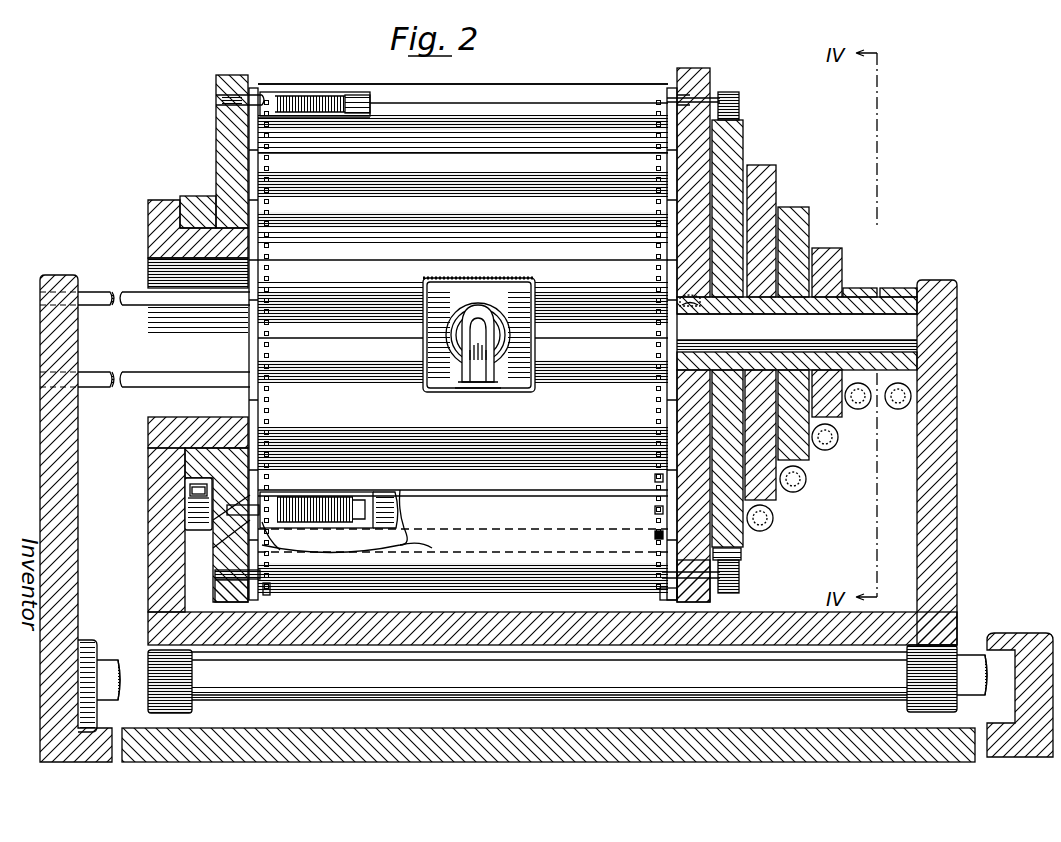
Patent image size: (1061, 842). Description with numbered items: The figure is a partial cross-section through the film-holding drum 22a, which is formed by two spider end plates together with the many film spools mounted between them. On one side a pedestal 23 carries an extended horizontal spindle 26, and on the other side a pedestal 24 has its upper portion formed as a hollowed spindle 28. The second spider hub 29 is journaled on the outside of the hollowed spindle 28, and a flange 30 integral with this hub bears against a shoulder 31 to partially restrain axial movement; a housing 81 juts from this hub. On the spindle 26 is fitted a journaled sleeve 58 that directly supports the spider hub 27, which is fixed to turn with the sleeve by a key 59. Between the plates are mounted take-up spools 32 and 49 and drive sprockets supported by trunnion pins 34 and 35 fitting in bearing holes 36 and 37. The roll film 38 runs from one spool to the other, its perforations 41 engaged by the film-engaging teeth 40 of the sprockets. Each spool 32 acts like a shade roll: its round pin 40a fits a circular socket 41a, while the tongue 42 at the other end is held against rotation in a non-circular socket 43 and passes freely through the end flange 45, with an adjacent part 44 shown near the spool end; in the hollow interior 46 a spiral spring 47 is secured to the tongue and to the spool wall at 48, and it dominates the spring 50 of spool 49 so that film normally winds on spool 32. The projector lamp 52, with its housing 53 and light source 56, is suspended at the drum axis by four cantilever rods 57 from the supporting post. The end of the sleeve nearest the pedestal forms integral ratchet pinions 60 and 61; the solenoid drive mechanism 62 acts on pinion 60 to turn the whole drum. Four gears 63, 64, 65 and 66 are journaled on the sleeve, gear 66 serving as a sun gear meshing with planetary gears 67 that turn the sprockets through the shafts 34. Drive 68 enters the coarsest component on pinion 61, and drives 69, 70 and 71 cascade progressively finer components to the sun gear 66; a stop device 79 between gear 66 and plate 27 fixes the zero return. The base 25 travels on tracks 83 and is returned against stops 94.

The drum 22a is at (521, 77).
The pedestal 23 is at (935, 282).
The pedestal 24 is at (158, 470).
The base 25 is at (775, 622).
The horizontal spindle 26 is at (900, 334).
The spider hub 27 is at (688, 70).
The hollowed spindle 28 is at (212, 425).
The second spider hub 29 is at (216, 112).
The flange 30 is at (193, 197).
The shoulder 31 is at (164, 205).
The film take-up spool 32 is at (400, 495).
The trunnion pin 34 is at (712, 588).
The trunnion pin 35 is at (215, 573).
The bearing hole 36 is at (664, 595).
The bearing hole 37 is at (218, 590).
The roll film 38 is at (590, 95).
The film-engaging teeth 40 is at (270, 588).
The pin 40a is at (655, 510).
The perforations 41 is at (270, 417).
The circular socket 41a is at (655, 535).
The tongue 42 is at (230, 525).
The non-circular matching socket 43 is at (230, 545).
The lever 44 is at (270, 530).
The end flange 45 is at (272, 486).
The hollow interior 46 is at (378, 496).
The spiral spring 47 is at (345, 497).
The interior wall attachment 48 is at (215, 497).
The film take-up spool 49 is at (357, 92).
The spring 50 is at (305, 98).
The projector lamp 52 is at (416, 277).
The housing 53 is at (498, 278).
The light source 56 is at (474, 322).
The cantilever rods 57 is at (128, 372).
The journaled sleeve 58 is at (40, 340).
The key 59 is at (693, 306).
The pinion 60 is at (890, 290).
The pinion 61 is at (858, 290).
The solenoid drive mechanism 62 is at (898, 410).
The gear 63 is at (825, 252).
The gear 64 is at (795, 210).
The gear 65 is at (762, 170).
The sun gear 66 is at (742, 122).
The planetary gears 67 is at (730, 92).
The drive mechanism 68 is at (859, 410).
The drive 69 is at (830, 448).
The drive 70 is at (803, 488).
The drive 71 is at (771, 526).
The stop device 79 is at (655, 481).
The housing 81 is at (190, 514).
The tracks 83 is at (470, 696).
The stops 94 is at (100, 648).